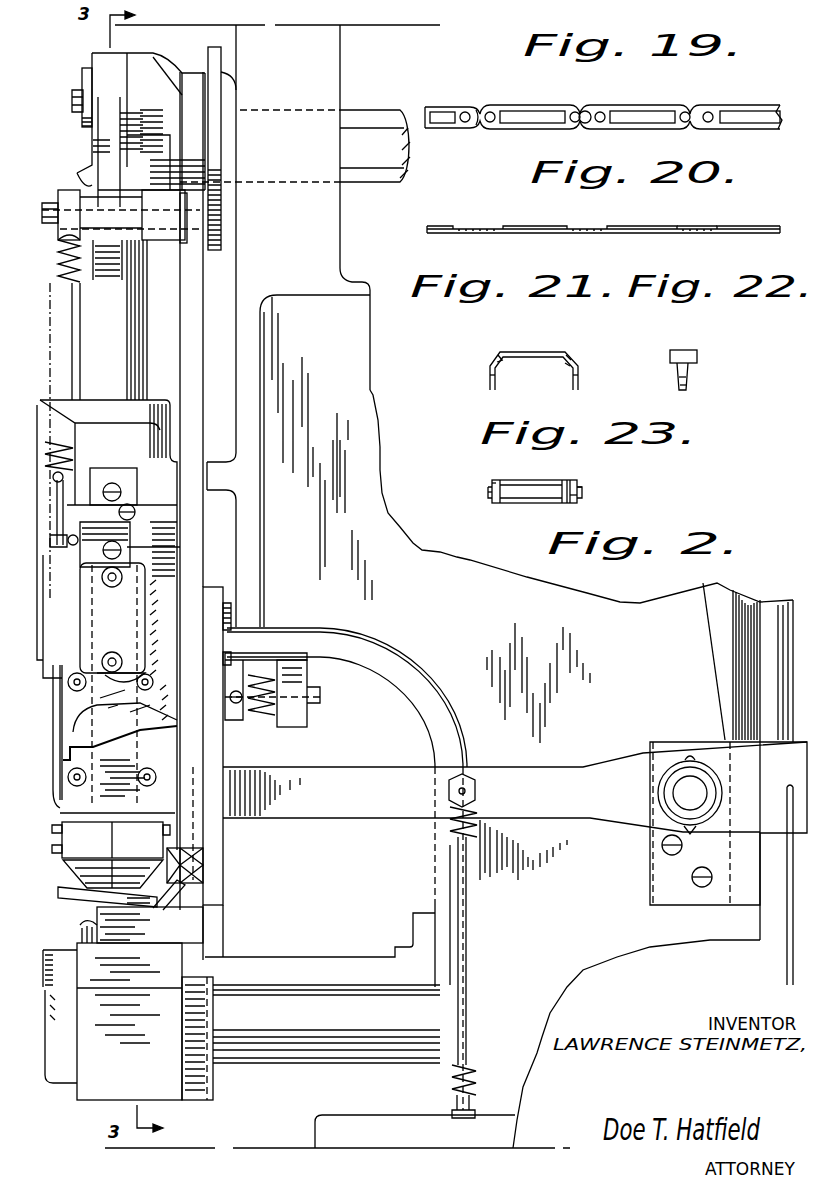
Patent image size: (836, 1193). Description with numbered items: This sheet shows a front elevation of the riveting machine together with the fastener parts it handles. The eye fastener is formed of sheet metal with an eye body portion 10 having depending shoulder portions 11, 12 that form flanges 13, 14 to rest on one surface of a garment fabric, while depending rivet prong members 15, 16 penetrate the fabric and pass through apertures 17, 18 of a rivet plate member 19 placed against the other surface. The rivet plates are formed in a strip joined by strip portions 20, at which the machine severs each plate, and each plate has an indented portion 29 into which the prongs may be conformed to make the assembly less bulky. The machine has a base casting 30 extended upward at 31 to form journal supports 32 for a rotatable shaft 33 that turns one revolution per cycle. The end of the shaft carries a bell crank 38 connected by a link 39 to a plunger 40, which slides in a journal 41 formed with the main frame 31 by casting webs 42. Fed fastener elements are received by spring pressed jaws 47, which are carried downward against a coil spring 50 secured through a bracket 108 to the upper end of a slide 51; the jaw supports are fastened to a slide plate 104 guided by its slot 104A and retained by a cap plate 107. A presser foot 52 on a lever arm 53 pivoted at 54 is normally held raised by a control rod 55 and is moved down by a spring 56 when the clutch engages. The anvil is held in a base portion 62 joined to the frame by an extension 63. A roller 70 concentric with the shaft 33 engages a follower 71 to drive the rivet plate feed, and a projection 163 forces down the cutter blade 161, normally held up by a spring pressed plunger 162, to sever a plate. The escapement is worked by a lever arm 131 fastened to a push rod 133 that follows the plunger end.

In FIG. 2, the journal support 32 is at (322, 72).
In FIG. 2, the main frame 31 is at (357, 461).
In FIG. 2, the rotatable shaft 33 is at (378, 118).
In FIG. 2, the roller 70 is at (214, 57).
In FIG. 2, the bell crank 38 is at (138, 110).
In FIG. 2, the link 39 is at (107, 152).
In FIG. 2, the follower 71 is at (224, 219).
In FIG. 2, the coil spring 50 is at (56, 263).
In FIG. 2, the plunger 40 is at (132, 277).
In FIG. 2, the rivet prong member 15 is at (192, 352).
In FIG. 21, the rivet prong member 15 is at (578, 378).
In FIG. 23, the rivet prong member 15 is at (585, 493).
In FIG. 2, the journal 41 is at (43, 405).
In FIG. 2, the bracket 108 is at (80, 503).
In FIG. 2, the casting webs 42 is at (230, 477).
In FIG. 2, the slot 104A is at (123, 545).
In FIG. 2, the slide 51 is at (73, 572).
In FIG. 2, the cap plate 107 is at (87, 635).
In FIG. 2, the slide plate 104 is at (82, 701).
In FIG. 2, the projection 163 is at (80, 748).
In FIG. 2, the spring pressed jaw 47 is at (73, 850).
In FIG. 2, the presser foot 52 is at (58, 890).
In FIG. 2, the cutter blade 161 is at (82, 924).
In FIG. 2, the spring pressed plunger 162 is at (150, 925).
In FIG. 2, the base portion 62 is at (62, 1075).
In FIG. 2, the extension 63 is at (337, 950).
In FIG. 2, the base casting 30 is at (367, 1105).
In FIG. 2, the push rod 133 is at (320, 697).
In FIG. 2, the lever arm 131 is at (243, 725).
In FIG. 2, the lever arm 53 is at (338, 810).
In FIG. 2, the spring 56 is at (453, 825).
In FIG. 2, the pivot 54 is at (690, 792).
In FIG. 2, the control rod 55 is at (787, 953).
In FIG. 19, the rivet plate member 19 is at (540, 118).
In FIG. 20, the rivet plate member 19 is at (547, 233).
In FIG. 19, the aperture 18 is at (468, 107).
In FIG. 20, the aperture 18 is at (500, 220).
In FIG. 19, the aperture 17 is at (580, 110).
In FIG. 19, the strip portion 20 is at (478, 126).
In FIG. 20, the indented portion 29 is at (683, 229).
In FIG. 21, the eye body portion 10 is at (555, 338).
In FIG. 22, the eye body portion 10 is at (693, 347).
In FIG. 23, the eye body portion 10 is at (528, 498).
In FIG. 21, the shoulder portion 12 is at (500, 356).
In FIG. 23, the shoulder portion 12 is at (490, 483).
In FIG. 21, the shoulder portion 11 is at (570, 365).
In FIG. 23, the shoulder portion 11 is at (583, 497).
In FIG. 21, the rivet prong member 16 is at (490, 377).
In FIG. 22, the rivet prong member 16 is at (688, 377).
In FIG. 23, the rivet prong member 16 is at (488, 492).
In FIG. 21, the flange 14 is at (497, 362).
In FIG. 21, the flange 13 is at (568, 366).